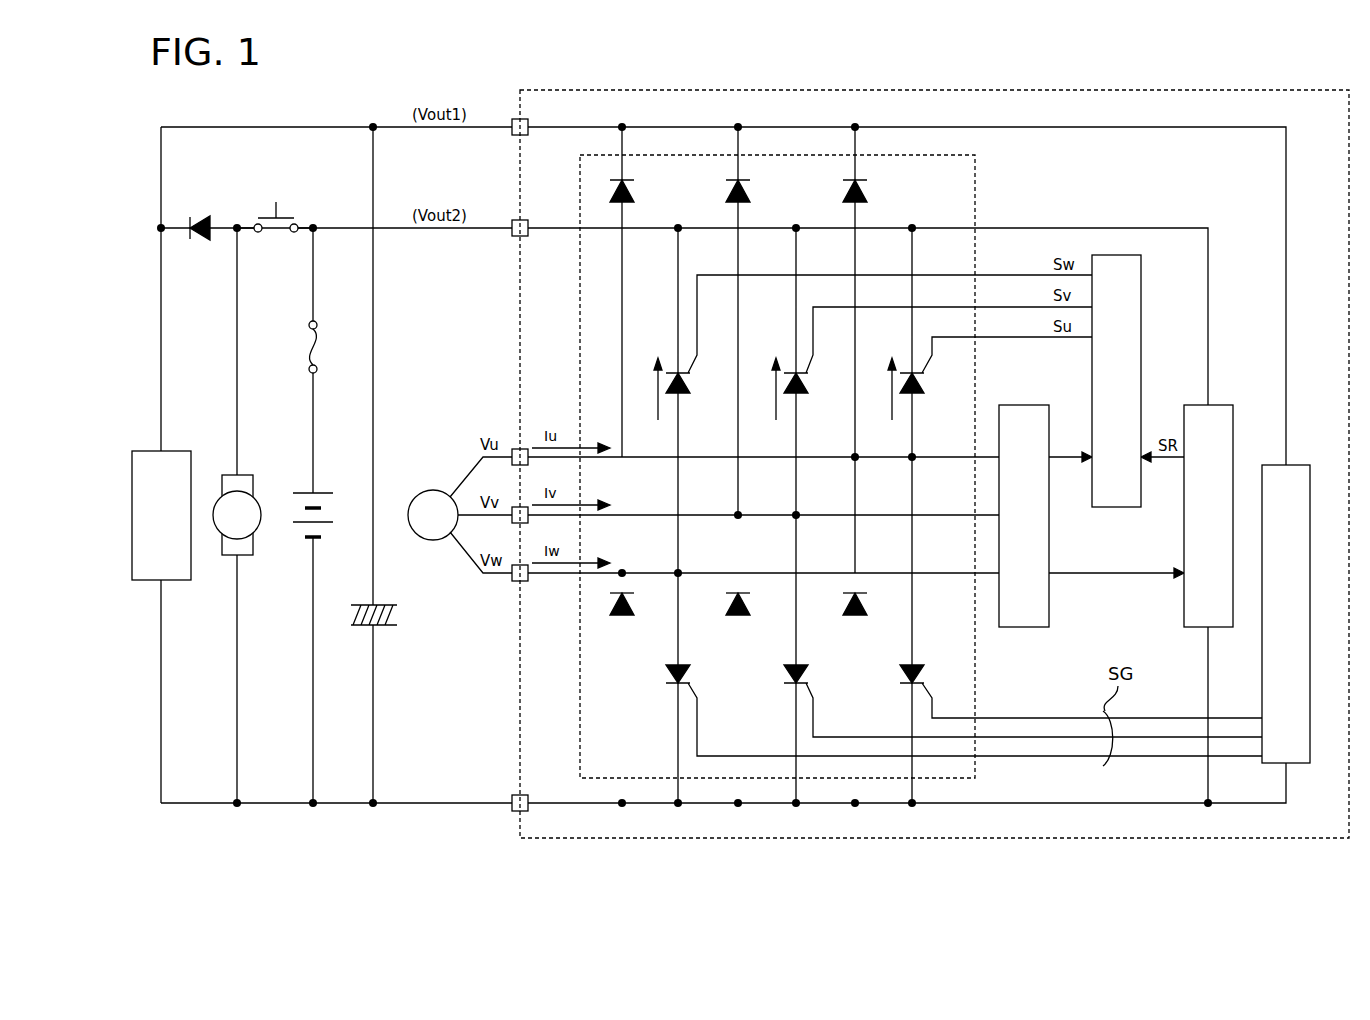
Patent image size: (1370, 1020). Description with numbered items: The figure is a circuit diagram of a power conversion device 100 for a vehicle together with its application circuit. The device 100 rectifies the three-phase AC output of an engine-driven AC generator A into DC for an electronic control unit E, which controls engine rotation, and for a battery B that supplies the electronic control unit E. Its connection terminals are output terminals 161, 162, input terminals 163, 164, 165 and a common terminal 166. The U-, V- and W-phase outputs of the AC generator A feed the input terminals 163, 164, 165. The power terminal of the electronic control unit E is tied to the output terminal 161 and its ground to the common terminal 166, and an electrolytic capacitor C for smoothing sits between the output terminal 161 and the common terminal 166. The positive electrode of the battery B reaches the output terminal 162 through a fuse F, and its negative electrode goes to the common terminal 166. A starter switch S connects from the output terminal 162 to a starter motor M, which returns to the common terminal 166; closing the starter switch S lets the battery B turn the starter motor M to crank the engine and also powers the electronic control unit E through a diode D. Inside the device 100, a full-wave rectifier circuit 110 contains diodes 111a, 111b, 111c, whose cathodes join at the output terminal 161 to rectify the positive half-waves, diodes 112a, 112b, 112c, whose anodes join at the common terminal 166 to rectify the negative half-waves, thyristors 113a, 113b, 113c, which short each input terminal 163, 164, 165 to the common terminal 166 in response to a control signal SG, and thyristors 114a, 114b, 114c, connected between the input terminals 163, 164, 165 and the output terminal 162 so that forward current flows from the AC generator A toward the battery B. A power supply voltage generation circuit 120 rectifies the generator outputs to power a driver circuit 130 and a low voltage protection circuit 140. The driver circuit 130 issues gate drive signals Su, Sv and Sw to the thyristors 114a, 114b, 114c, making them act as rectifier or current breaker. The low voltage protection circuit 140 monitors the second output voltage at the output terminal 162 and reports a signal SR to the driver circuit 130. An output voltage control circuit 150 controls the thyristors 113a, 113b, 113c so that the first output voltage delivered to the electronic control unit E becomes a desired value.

The power conversion device 100 is at (935, 95).
The full-wave rectifier circuit 110 is at (975, 178).
The diode 111a is at (866, 188).
The diode 111b is at (749, 188).
The diode 111c is at (633, 188).
The diode 112a is at (864, 614).
The diode 112b is at (747, 614).
The diode 112c is at (631, 614).
The thyristor 113a is at (902, 683).
The thyristor 113b is at (786, 683).
The thyristor 113c is at (668, 683).
The thyristor 114a is at (922, 395).
The thyristor 114b is at (807, 395).
The thyristor 114c is at (690, 395).
The power supply voltage generation circuit 120 is at (1020, 405).
The driver circuit 130 is at (1113, 507).
The low voltage protection circuit 140 is at (1222, 405).
The output voltage control circuit 150 is at (1297, 465).
The output terminal 161 is at (516, 120).
The output terminal 162 is at (516, 221).
The input terminal 163 is at (516, 450).
The input terminal 164 is at (516, 523).
The input terminal 165 is at (518, 582).
The common terminal 166 is at (516, 795).
The AC generator A is at (432, 490).
The battery B is at (320, 493).
The electrolytic capacitor C is at (366, 605).
The diode D is at (205, 218).
The electronic control unit E is at (176, 451).
The fuse F is at (309, 345).
The starter motor M is at (246, 475).
The starter switch S is at (286, 215).